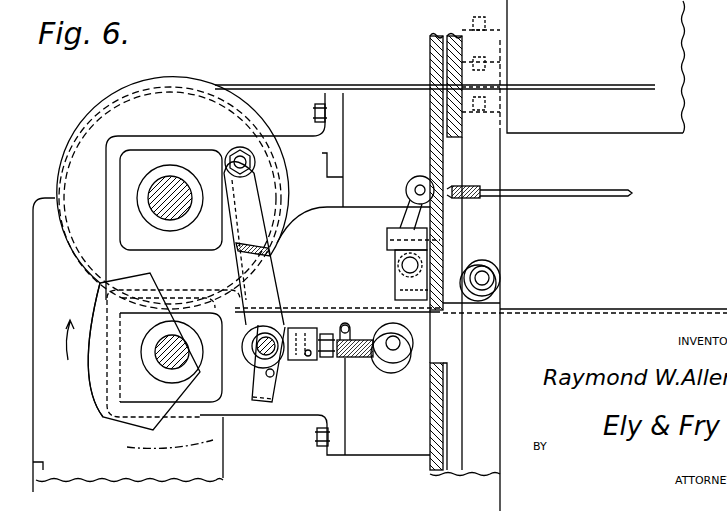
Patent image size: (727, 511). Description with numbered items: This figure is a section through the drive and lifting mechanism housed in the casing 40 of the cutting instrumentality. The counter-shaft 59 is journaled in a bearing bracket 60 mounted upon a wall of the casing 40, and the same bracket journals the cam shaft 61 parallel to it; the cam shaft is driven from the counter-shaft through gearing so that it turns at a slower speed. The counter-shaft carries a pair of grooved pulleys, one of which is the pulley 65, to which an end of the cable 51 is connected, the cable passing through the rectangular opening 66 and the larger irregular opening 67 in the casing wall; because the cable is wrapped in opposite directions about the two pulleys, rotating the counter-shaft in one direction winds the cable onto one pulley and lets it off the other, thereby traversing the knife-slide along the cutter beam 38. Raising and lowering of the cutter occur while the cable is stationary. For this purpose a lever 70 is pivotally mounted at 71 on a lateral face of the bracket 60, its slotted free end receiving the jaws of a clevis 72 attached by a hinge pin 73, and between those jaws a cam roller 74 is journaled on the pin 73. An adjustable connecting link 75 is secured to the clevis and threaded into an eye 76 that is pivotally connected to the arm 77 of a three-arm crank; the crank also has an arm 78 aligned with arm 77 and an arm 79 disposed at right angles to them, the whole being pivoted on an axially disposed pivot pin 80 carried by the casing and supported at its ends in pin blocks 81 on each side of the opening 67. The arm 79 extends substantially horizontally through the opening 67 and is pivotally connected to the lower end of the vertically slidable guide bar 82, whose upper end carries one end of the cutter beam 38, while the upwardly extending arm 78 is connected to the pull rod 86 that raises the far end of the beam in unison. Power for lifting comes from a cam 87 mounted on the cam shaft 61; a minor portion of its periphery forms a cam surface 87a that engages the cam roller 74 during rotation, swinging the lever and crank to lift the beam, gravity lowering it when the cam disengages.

The cutter beam 38 is at (633, 133).
The casing 40 is at (431, 50).
The cable 51 is at (627, 78).
The counter-shaft 59 is at (150, 190).
The bearing bracket 60 is at (288, 210).
The cam shaft 61 is at (158, 352).
The grooved pulley 65 is at (178, 105).
The rectangular opening 66 is at (447, 70).
The opening of irregular shape 67 is at (443, 362).
The lever 70 is at (275, 290).
The pivot 71 is at (250, 160).
The clevis 72 is at (300, 362).
The hinge pin 73 is at (262, 368).
The cam roller 74 is at (252, 400).
The adjustable connecting link 75 is at (326, 358).
The eye 76 is at (350, 345).
The crank arm 77 is at (420, 330).
The crank arm 78 is at (405, 205).
The crank arm 79 is at (485, 300).
The pivot pin 80 is at (400, 268).
The pin block 81 is at (395, 222).
The guide bar 82 is at (490, 168).
The pull rod 86 is at (600, 196).
The cam 87 is at (123, 417).
The cam surface 87a is at (85, 316).